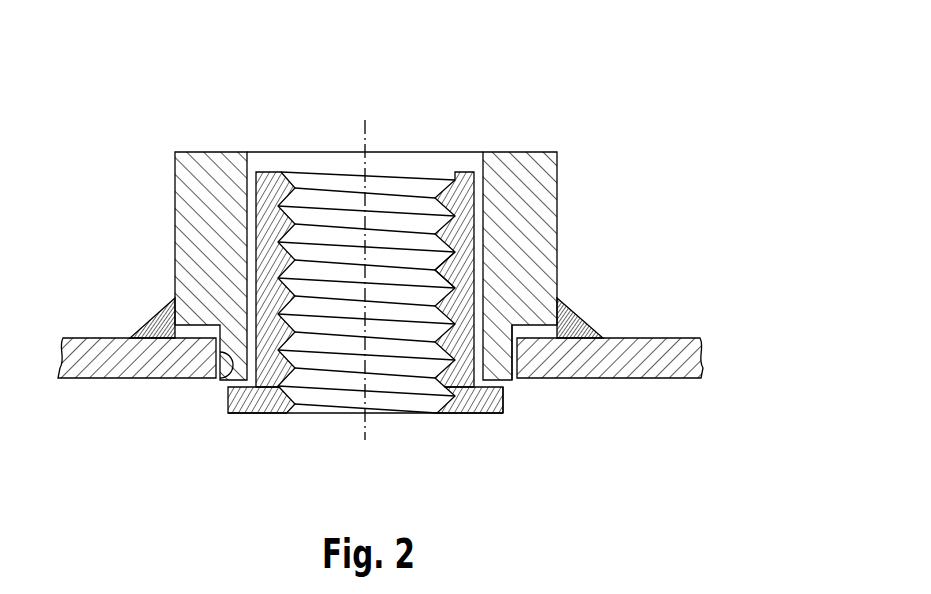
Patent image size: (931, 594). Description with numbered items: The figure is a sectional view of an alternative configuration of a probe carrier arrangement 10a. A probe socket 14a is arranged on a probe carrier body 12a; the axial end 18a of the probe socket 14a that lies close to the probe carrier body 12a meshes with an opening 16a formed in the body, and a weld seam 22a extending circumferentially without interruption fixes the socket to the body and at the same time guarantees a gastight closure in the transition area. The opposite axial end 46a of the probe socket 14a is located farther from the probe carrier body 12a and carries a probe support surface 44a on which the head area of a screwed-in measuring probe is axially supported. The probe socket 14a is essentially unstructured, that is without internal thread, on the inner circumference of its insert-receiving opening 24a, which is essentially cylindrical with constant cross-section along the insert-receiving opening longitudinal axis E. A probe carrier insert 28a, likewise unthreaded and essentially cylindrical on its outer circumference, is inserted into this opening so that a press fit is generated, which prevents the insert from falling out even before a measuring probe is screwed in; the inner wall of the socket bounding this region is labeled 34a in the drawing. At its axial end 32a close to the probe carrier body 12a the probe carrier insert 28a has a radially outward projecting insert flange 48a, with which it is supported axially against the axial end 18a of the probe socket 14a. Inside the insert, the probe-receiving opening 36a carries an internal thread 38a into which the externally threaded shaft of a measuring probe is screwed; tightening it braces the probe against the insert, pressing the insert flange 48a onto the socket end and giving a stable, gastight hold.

The probe carrier arrangement 10a is at (415, 266).
The probe carrier body 12a is at (683, 379).
The probe socket 14a is at (333, 252).
The opening 16a is at (221, 381).
The axial end 18a is at (495, 368).
The weld seam 22a is at (150, 327).
The insert-receiving opening 24a is at (452, 158).
The probe carrier insert 28a is at (416, 452).
The axial end 32a is at (463, 413).
The threaded insert 34a is at (435, 284).
The probe-receiving opening 36a is at (435, 232).
The internal thread 38a is at (440, 268).
The probe support surface 44a is at (527, 155).
The axial end 46a is at (173, 157).
The insert flange 48a is at (505, 406).
The insert-receiving opening longitudinal axis E is at (399, 244).